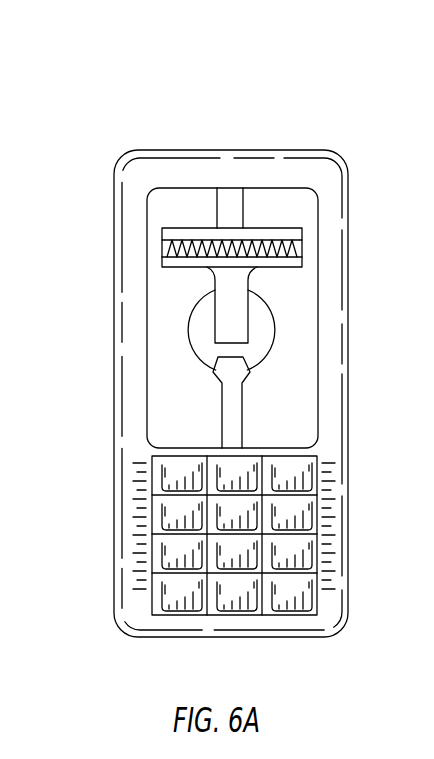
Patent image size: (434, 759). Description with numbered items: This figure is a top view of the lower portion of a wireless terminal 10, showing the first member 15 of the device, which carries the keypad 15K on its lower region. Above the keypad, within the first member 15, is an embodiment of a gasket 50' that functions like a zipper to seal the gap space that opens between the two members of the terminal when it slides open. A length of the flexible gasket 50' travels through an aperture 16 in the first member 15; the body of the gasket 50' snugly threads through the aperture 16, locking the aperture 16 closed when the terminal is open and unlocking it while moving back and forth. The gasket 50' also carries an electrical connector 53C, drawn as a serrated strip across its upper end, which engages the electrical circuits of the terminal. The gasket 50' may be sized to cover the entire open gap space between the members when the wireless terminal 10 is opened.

The wireless terminal 10 is at (223, 48).
The first member 15 is at (328, 348).
The keypad 15K is at (300, 550).
The aperture 16 is at (228, 348).
The gasket 50' is at (294, 246).
The electrical connector 53C is at (232, 242).